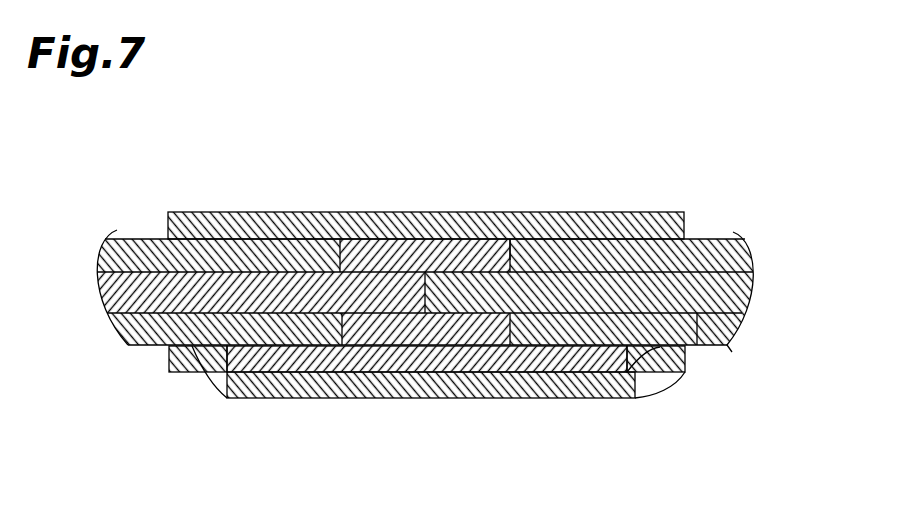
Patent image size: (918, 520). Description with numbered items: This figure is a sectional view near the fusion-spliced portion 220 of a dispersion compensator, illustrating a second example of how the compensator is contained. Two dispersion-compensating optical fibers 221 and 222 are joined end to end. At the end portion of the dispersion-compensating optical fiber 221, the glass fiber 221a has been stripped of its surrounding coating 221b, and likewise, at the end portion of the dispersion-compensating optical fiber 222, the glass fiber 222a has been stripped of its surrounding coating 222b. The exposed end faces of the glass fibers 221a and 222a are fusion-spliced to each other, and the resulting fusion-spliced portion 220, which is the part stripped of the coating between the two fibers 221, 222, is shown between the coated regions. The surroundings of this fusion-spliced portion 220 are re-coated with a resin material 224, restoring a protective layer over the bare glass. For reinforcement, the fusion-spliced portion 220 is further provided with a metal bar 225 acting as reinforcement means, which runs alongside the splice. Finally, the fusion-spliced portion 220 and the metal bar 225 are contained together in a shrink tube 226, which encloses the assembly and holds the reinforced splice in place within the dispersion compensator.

The fusion-spliced portion 220 is at (510, 175).
The dispersion-compensating optical fiber 221 is at (132, 238).
The glass fiber 221a is at (128, 347).
The coating 221b is at (150, 238).
The dispersion-compensating optical fiber 222 is at (730, 234).
The glass fiber 222a is at (698, 345).
The coating 222b is at (702, 250).
The resin material 224 is at (402, 252).
The metal bar 225 is at (440, 360).
The shrink tube 226 is at (543, 212).